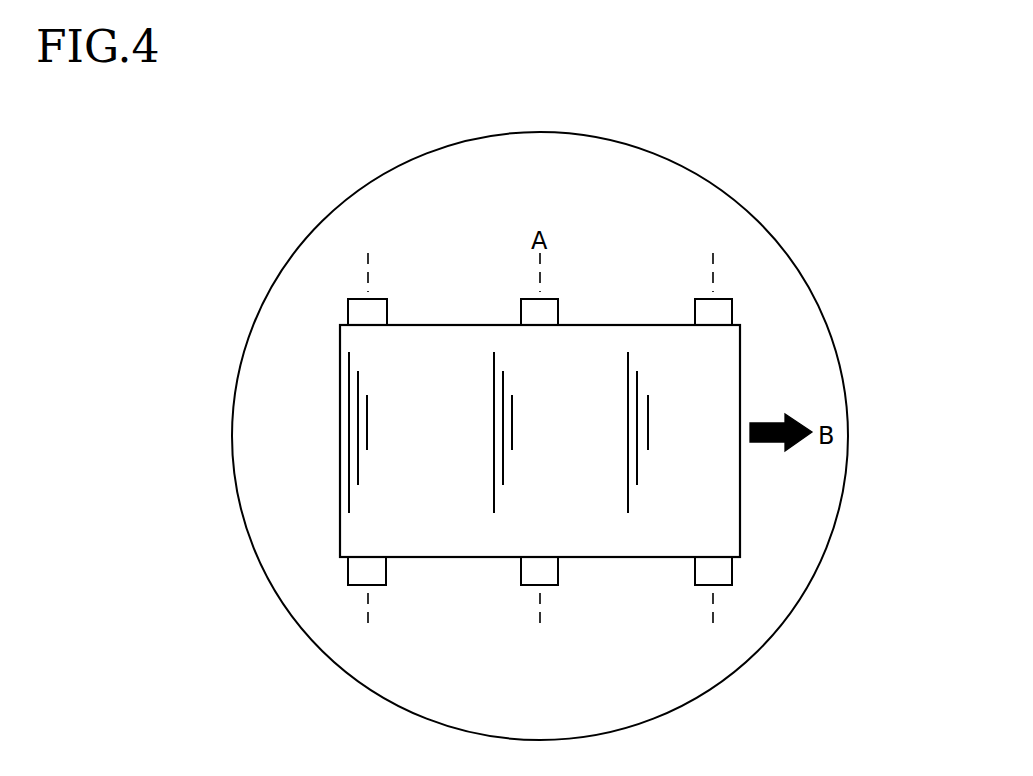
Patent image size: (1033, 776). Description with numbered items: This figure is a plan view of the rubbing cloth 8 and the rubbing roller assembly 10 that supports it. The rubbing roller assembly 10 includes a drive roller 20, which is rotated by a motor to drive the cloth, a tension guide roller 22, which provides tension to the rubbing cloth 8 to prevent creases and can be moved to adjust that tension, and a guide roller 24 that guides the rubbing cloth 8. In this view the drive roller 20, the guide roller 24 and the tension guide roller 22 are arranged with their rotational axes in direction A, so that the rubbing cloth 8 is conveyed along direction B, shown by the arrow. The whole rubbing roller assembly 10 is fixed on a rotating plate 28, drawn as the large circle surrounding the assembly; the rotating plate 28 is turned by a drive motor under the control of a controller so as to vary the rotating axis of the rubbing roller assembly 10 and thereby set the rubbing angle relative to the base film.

The rubbing cloth 8 is at (540, 467).
The rubbing roller assembly 10 is at (674, 233).
The drive roller 20 is at (341, 442).
The tension guide roller 22 is at (510, 442).
The guide roller 24 is at (688, 442).
The rotating plate 28 is at (550, 436).